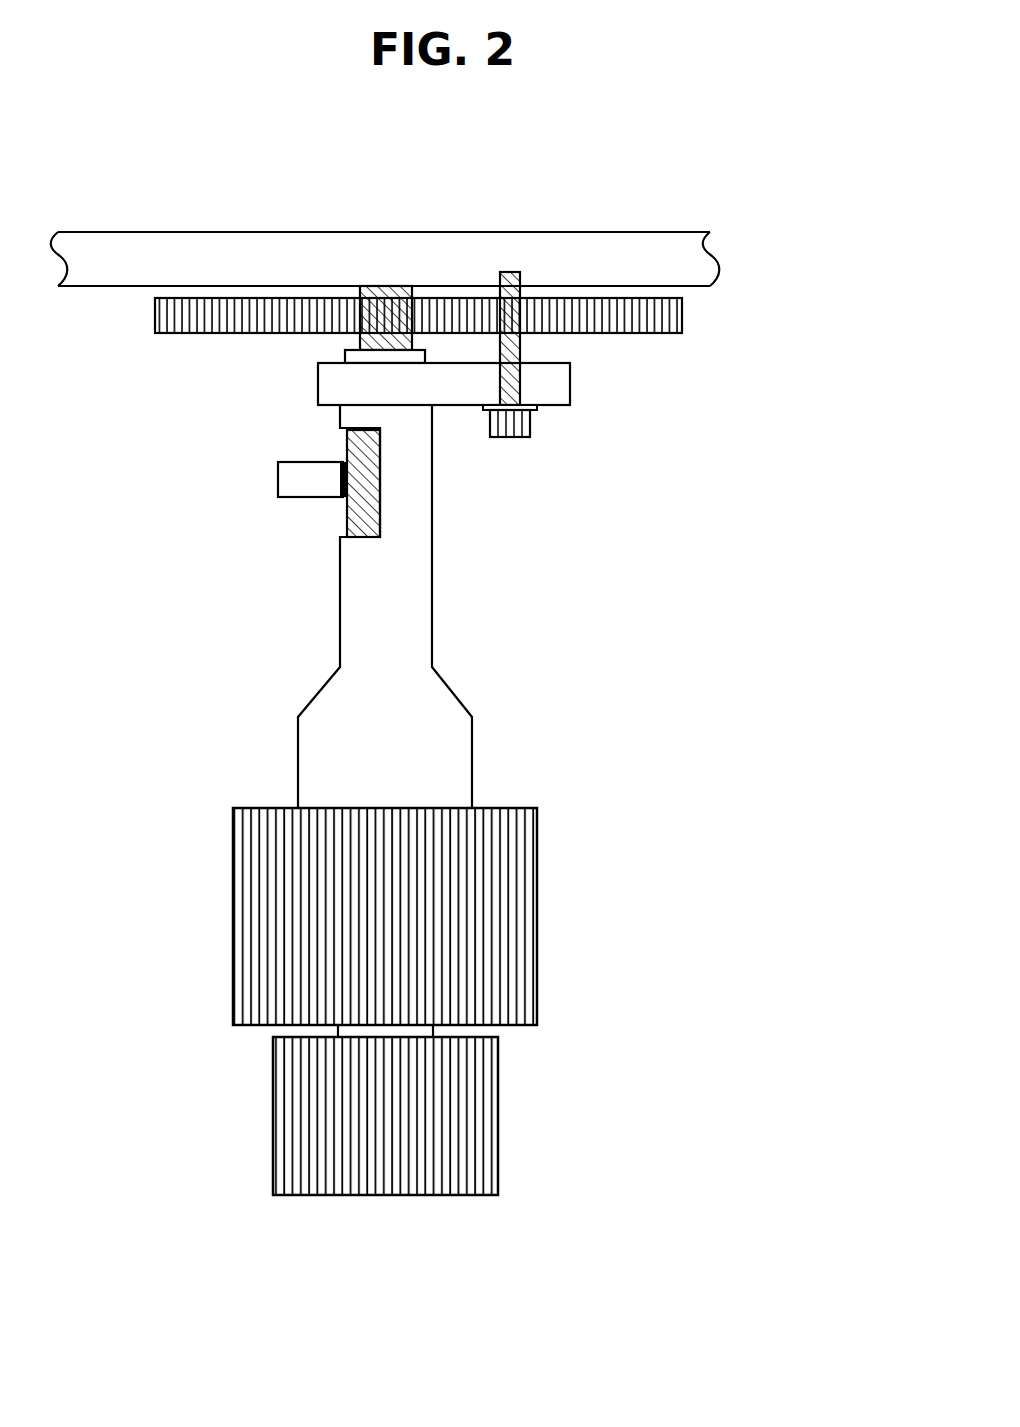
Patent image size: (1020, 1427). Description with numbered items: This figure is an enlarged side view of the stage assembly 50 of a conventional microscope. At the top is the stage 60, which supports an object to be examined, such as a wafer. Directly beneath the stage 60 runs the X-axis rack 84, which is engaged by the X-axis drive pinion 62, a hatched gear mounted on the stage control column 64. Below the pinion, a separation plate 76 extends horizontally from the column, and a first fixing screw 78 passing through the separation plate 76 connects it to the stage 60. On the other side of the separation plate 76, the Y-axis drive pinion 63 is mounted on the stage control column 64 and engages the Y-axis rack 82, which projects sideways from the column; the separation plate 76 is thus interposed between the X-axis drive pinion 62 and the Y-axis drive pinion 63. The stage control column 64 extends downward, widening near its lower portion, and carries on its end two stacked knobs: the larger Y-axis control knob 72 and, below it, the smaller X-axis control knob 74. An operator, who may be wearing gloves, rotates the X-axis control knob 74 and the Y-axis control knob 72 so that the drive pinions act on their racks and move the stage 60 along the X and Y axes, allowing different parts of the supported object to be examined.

The stage assembly 50 is at (740, 418).
The stage 60 is at (697, 257).
The X-axis drive pinion 62 is at (388, 296).
The Y-axis drive pinion 63 is at (353, 447).
The stage control column 64 is at (433, 597).
The Y-axis control knob 72 is at (538, 914).
The X-axis control knob 74 is at (500, 1118).
The separation plate 76 is at (572, 385).
The first fixing screw 78 is at (508, 440).
The Y-axis rack 82 is at (293, 485).
The X-axis rack 84 is at (683, 318).